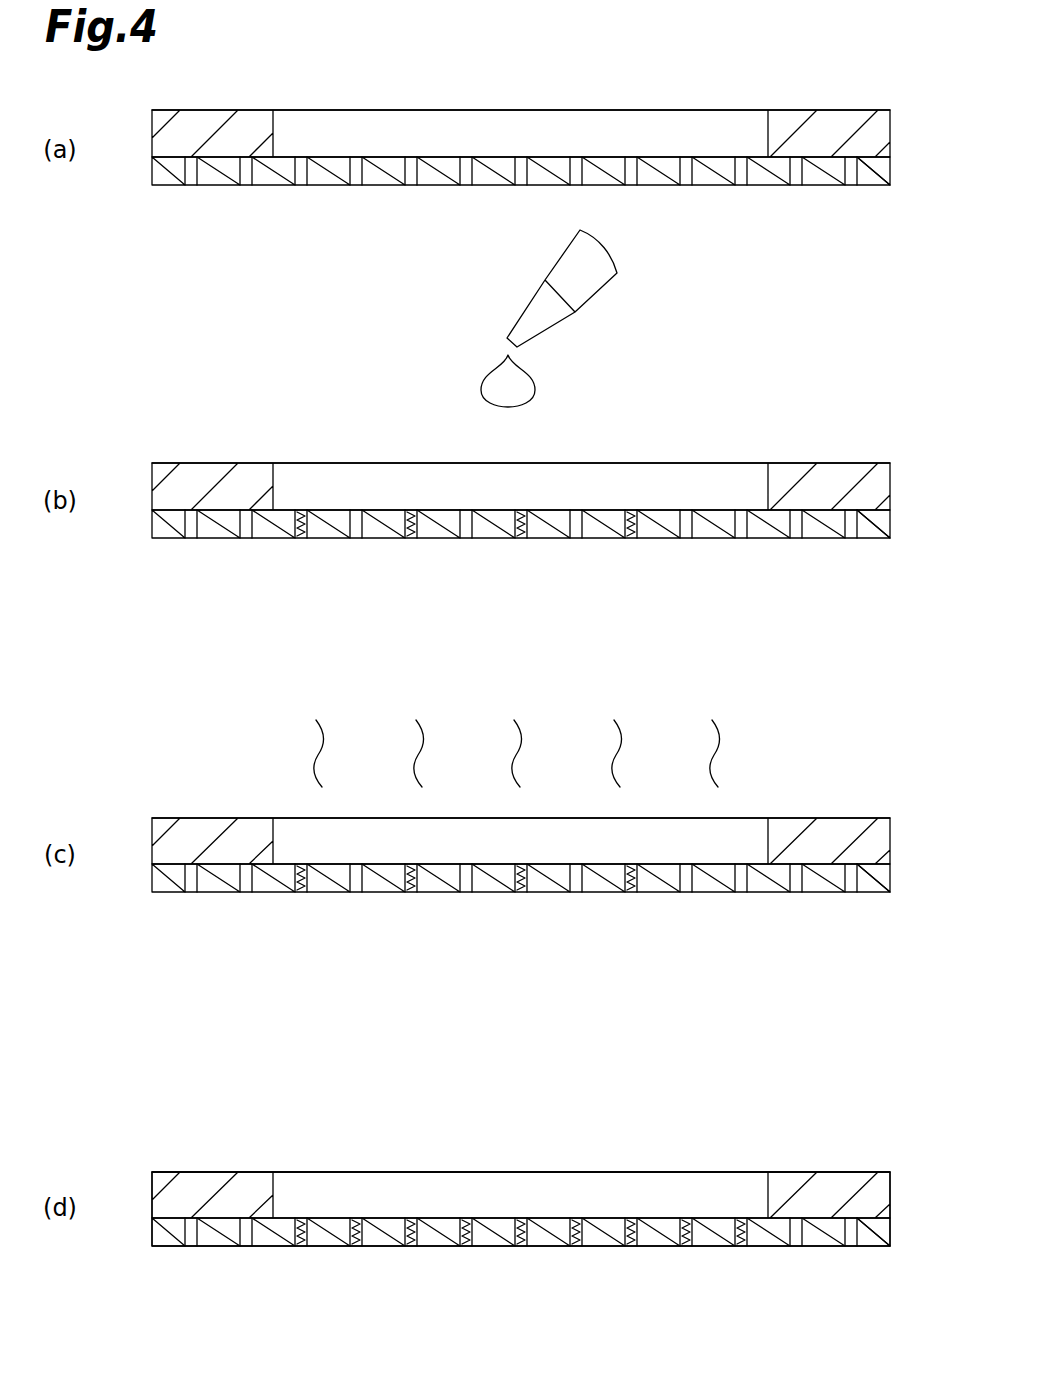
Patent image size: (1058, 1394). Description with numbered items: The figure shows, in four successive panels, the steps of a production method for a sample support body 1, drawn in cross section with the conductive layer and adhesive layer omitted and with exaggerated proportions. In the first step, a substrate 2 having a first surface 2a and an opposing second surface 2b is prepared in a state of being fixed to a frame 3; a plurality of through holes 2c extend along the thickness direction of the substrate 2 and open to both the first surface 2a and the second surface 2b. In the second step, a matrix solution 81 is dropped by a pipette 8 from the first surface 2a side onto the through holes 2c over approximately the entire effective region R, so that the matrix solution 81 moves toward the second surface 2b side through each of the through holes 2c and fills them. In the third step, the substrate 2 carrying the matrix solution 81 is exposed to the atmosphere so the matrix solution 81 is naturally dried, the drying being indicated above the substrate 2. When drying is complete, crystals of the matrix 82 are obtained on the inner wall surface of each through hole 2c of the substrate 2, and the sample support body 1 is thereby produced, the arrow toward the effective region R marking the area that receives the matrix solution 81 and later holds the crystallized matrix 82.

The sample support body 1 is at (866, 1160).
The substrate 2 is at (877, 173).
The first surface 2a is at (890, 140).
The second surface 2b is at (865, 188).
The through hole 2c is at (303, 178).
The frame 3 is at (877, 127).
The pipette 8 is at (532, 297).
The matrix solution 81 is at (497, 378).
The matrix 82 is at (302, 1230).
The effective region R is at (597, 150).